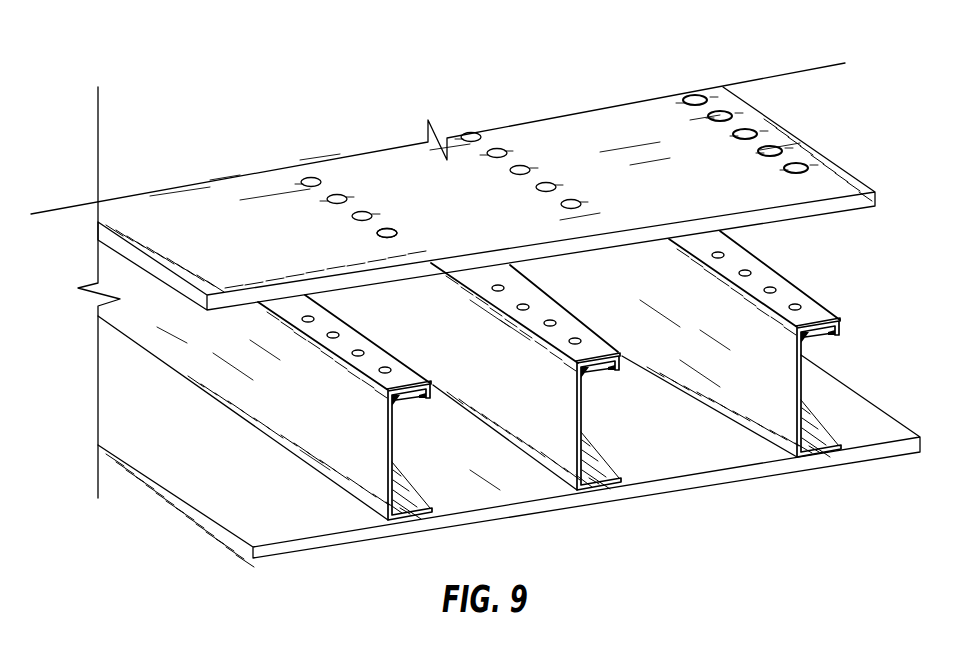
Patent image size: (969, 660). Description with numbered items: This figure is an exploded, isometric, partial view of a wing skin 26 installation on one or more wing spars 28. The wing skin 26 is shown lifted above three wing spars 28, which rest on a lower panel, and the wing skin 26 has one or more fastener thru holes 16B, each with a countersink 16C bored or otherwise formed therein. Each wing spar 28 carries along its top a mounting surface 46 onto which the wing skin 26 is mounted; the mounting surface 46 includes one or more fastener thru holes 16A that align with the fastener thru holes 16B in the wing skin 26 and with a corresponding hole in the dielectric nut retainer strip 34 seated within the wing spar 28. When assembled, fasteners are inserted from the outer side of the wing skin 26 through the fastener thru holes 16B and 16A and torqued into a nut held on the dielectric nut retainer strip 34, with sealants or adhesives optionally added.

The wing skin 26 is at (277, 283).
The wing spar 28 is at (392, 463).
The dielectric nut retainer strip 34 is at (405, 401).
The mounting surface 46 is at (370, 336).
The fastener thru hole 16A is at (345, 360).
The fastener thru hole 16B is at (395, 226).
The countersink 16C is at (370, 234).